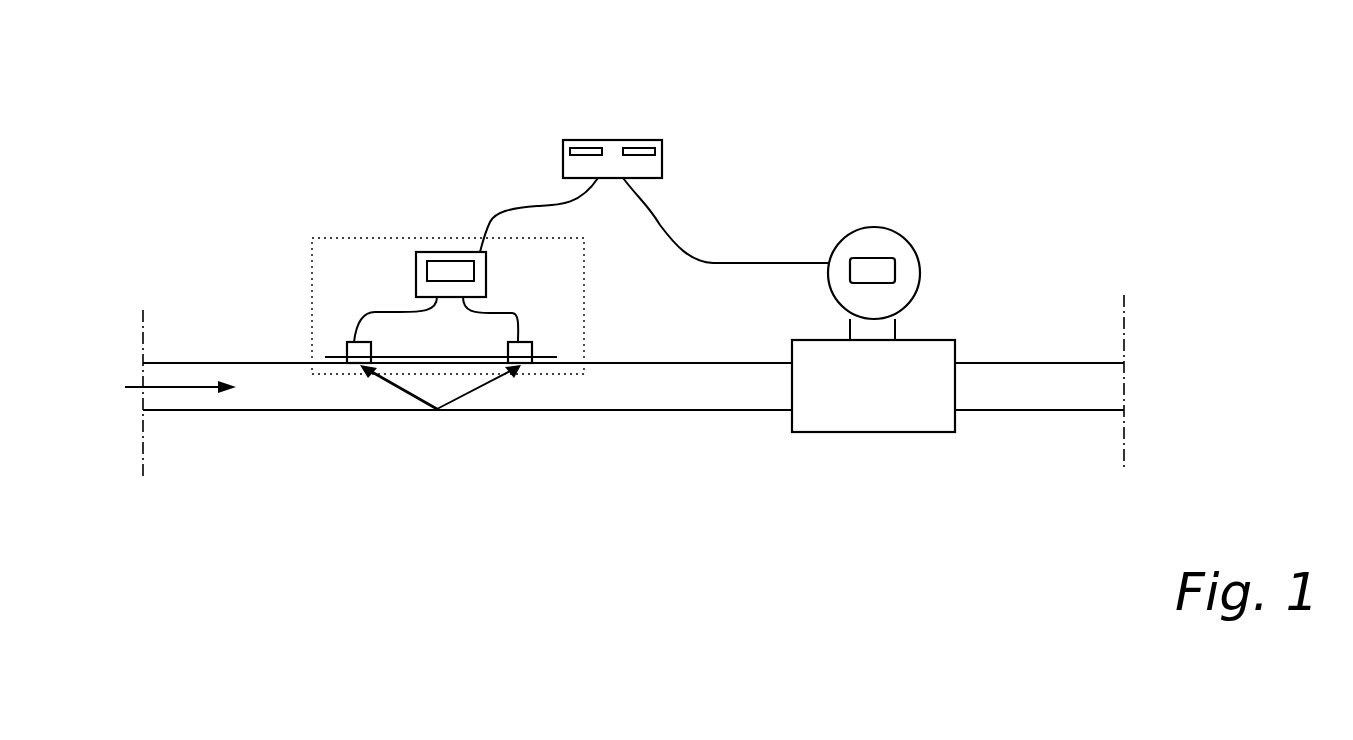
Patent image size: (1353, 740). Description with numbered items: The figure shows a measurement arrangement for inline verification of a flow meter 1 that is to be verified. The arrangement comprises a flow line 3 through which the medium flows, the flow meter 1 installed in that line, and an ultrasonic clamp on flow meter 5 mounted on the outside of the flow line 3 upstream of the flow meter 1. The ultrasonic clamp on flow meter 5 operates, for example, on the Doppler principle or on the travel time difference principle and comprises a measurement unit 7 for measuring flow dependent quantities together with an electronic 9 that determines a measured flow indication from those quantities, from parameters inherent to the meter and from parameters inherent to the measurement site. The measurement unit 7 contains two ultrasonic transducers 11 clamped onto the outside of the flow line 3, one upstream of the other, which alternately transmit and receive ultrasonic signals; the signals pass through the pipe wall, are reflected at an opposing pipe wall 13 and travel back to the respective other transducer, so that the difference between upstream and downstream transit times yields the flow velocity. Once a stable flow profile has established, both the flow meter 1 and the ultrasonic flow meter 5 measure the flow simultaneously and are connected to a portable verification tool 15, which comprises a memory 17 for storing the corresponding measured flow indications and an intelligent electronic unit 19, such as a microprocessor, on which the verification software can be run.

The flow meter 1 is at (906, 213).
The flow line 3 is at (665, 410).
The ultrasonic clamp on flow meter 5 is at (371, 227).
The measurement unit 7 is at (333, 323).
The electronic 9 is at (448, 262).
The ultrasonic transducers 11 is at (350, 350).
The opposing pipe wall 13 is at (437, 410).
The portable verification tool 15 is at (590, 140).
The memory 17 is at (563, 152).
The intelligent electronic unit 19 is at (655, 151).